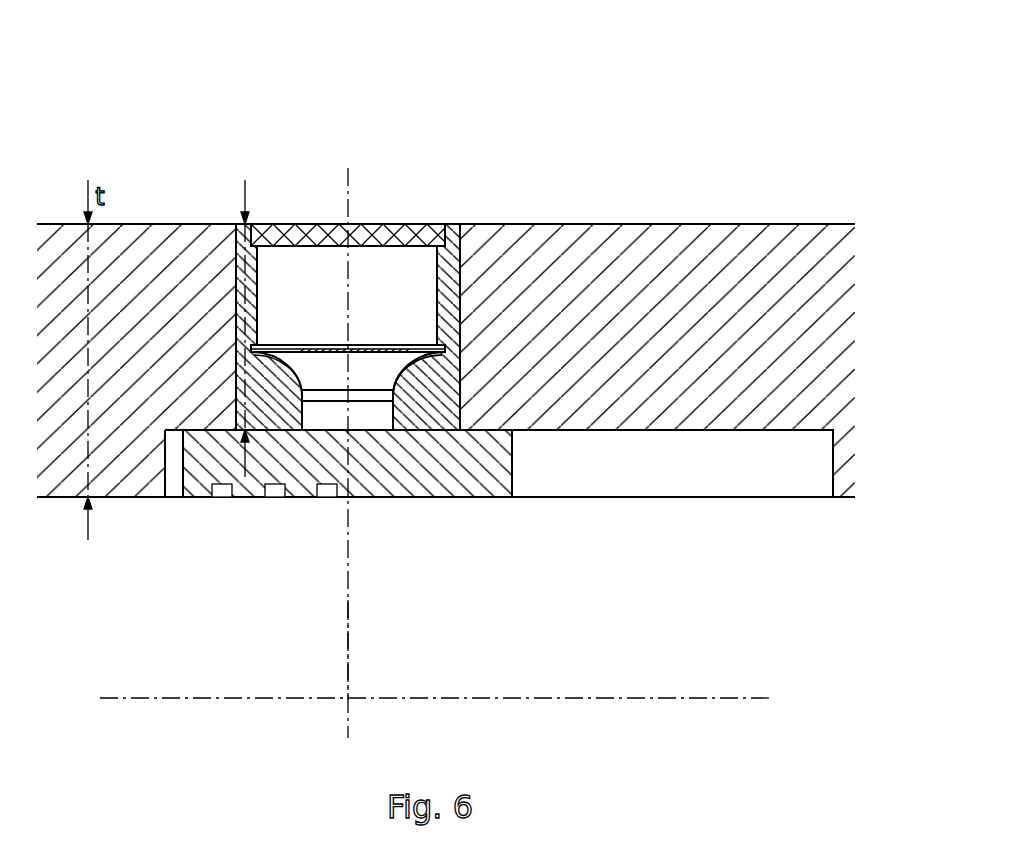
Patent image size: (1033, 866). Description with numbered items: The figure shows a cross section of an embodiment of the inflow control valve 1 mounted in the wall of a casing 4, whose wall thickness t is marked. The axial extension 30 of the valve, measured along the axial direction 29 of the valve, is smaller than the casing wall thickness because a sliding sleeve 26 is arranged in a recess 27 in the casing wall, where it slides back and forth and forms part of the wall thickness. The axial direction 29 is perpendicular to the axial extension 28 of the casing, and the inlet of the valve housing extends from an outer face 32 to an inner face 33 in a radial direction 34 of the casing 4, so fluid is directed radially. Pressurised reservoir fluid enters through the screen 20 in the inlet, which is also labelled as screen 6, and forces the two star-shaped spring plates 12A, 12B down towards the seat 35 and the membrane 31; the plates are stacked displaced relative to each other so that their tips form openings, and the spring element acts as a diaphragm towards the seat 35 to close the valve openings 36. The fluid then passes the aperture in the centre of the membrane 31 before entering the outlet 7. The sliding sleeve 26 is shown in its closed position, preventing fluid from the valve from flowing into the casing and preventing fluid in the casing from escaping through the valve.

The inflow control valve 1 is at (211, 105).
The casing 4 is at (663, 258).
The screen 6 is at (364, 225).
The outlet 7 is at (348, 413).
The star-shaped spring plate 12A is at (382, 343).
The star-shaped spring plate 12B is at (460, 272).
The screen 20 is at (302, 225).
The sliding sleeve 26 is at (207, 470).
The recess 27 is at (764, 480).
The axial extension of the casing 28 is at (495, 698).
The axial direction of the valve 29 is at (348, 580).
The axial extension of the valve 30 is at (333, 325).
The membrane 31 is at (400, 382).
The outer face 32 is at (388, 225).
The inner face 33 is at (408, 345).
The radial direction 34 is at (348, 640).
The seat 35 is at (430, 358).
The valve openings 36 is at (276, 357).